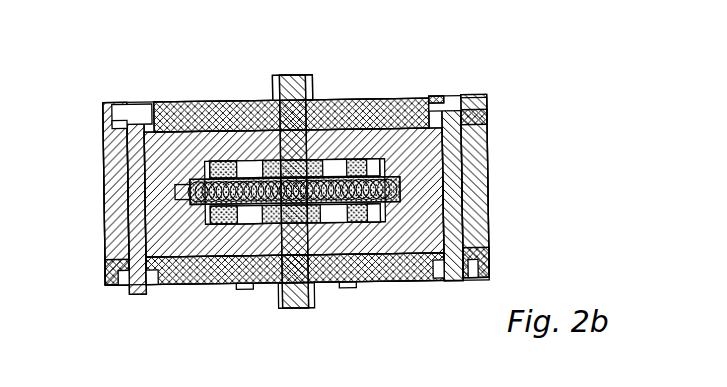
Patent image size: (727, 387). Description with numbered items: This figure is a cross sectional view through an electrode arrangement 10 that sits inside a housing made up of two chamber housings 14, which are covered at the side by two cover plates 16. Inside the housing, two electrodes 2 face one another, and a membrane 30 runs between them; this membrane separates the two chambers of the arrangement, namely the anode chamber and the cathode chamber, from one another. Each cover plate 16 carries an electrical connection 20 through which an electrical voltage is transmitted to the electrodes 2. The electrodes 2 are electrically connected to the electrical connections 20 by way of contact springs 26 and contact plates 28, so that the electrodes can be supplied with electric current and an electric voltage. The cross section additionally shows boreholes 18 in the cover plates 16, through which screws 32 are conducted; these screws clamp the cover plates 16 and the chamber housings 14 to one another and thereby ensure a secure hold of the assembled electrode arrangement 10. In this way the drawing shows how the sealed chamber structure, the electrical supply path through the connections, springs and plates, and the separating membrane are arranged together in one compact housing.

The electrode 2 is at (190, 182).
The electrode arrangement 10 is at (575, 57).
The chamber housing 14 is at (468, 147).
The cover plate 16 is at (373, 97).
The borehole 18 is at (467, 98).
The electrical connection 20 is at (292, 74).
The contact spring 26 is at (322, 158).
The contact plate 28 is at (200, 104).
The membrane 30 is at (172, 191).
The screw 32 is at (110, 286).